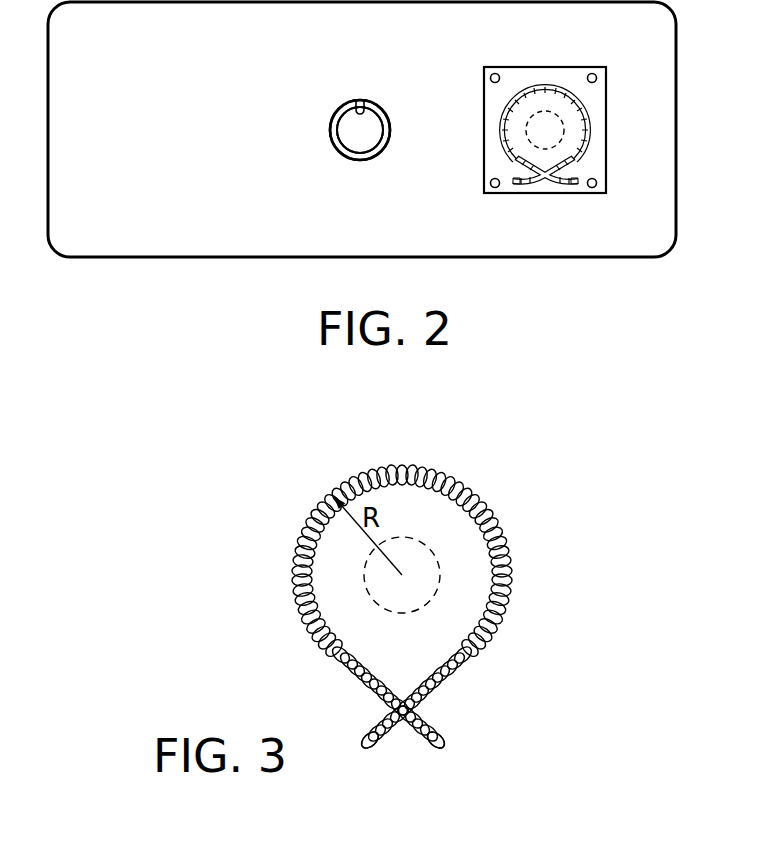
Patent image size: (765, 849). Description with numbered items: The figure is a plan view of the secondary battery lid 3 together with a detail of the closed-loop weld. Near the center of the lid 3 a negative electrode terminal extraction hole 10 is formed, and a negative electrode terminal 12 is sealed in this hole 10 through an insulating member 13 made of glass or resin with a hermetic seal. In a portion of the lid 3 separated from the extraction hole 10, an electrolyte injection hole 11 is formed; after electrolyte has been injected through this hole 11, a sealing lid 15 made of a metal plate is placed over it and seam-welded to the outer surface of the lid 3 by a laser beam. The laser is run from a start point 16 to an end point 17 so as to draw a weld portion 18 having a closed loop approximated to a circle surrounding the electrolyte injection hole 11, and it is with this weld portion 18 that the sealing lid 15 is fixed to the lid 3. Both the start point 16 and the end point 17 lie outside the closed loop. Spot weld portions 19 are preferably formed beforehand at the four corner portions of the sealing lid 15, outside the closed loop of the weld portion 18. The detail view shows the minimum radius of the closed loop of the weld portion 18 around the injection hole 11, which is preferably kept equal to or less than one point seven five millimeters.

In FIG. 2, the lid 3 is at (670, 37).
In FIG. 2, the negative electrode terminal extraction hole 10 is at (360, 100).
In FIG. 2, the electrolyte injection hole 11 is at (549, 109).
In FIG. 3, the electrolyte injection hole 11 is at (440, 564).
In FIG. 2, the negative electrode terminal 12 is at (366, 150).
In FIG. 2, the insulating member 13 is at (341, 150).
In FIG. 2, the sealing lid 15 is at (515, 66).
In FIG. 2, the start point 16 is at (513, 187).
In FIG. 3, the start point 16 is at (372, 746).
In FIG. 2, the end point 17 is at (576, 187).
In FIG. 3, the end point 17 is at (437, 746).
In FIG. 2, the weld portion 18 is at (589, 129).
In FIG. 3, the weld portion 18 is at (498, 629).
In FIG. 2, the spot weld portions 19 is at (490, 78).